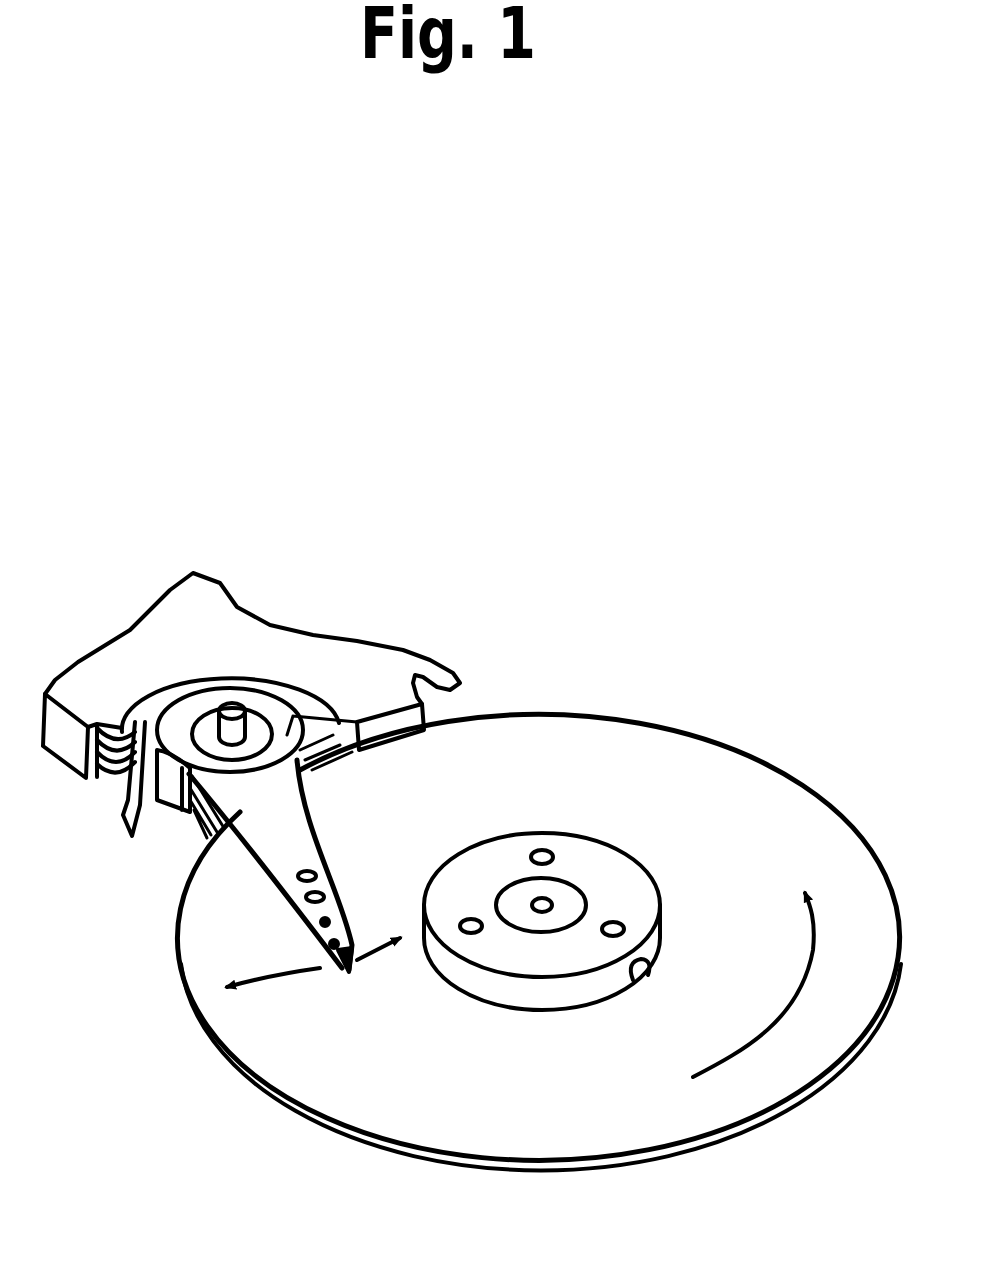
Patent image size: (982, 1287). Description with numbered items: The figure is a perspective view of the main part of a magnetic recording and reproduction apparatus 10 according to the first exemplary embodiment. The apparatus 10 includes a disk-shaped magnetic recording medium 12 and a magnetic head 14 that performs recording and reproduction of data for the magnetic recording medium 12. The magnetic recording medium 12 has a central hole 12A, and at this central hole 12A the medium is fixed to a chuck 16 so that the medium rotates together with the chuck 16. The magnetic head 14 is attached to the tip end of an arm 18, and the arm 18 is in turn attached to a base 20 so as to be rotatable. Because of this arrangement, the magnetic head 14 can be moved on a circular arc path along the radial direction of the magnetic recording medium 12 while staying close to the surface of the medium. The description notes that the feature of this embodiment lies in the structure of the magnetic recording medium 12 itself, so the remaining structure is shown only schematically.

The magnetic recording and reproduction apparatus 10 is at (630, 675).
The magnetic recording medium 12 is at (732, 770).
The central hole 12A is at (641, 972).
The magnetic head 14 is at (345, 968).
The chuck 16 is at (529, 995).
The arm 18 is at (305, 910).
The base 20 is at (292, 662).